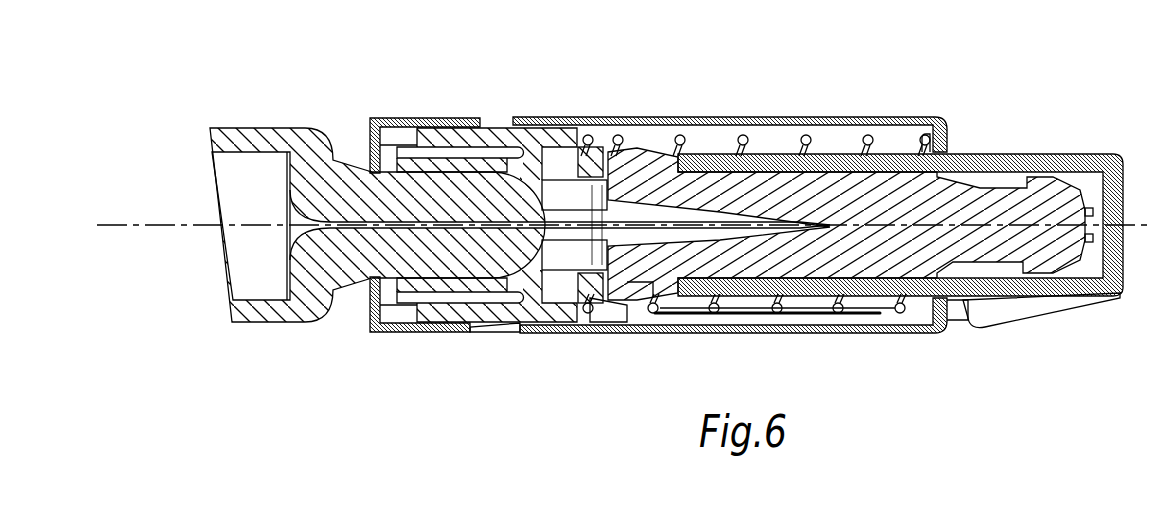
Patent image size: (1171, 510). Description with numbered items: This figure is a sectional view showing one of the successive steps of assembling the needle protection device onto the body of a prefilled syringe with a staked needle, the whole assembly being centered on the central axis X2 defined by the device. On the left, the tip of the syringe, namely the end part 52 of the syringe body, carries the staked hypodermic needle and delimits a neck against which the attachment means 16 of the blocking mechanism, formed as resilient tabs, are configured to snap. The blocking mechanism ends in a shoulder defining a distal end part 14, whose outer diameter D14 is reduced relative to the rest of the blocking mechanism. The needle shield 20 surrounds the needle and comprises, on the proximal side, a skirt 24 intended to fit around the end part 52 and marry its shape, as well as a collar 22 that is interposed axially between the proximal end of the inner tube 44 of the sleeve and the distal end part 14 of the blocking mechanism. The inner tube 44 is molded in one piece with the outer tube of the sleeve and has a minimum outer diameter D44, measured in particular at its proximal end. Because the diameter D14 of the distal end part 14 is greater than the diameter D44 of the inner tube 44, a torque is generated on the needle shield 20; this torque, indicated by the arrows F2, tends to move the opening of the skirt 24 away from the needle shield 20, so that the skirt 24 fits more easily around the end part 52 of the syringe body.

The distal end part 14 is at (597, 300).
The attachment means 16 is at (463, 282).
The needle shield 20 is at (908, 210).
The collar 22 is at (640, 288).
The skirt 24 is at (583, 180).
The inner tube 44 is at (770, 165).
The end part of the syringe body 52 is at (443, 200).
The outer diameter of the distal end part D14 is at (635, 250).
The minimum outer diameter of the inner tube D44 is at (740, 250).
The arrows F2 is at (563, 148).
The central axis X2 is at (610, 225).